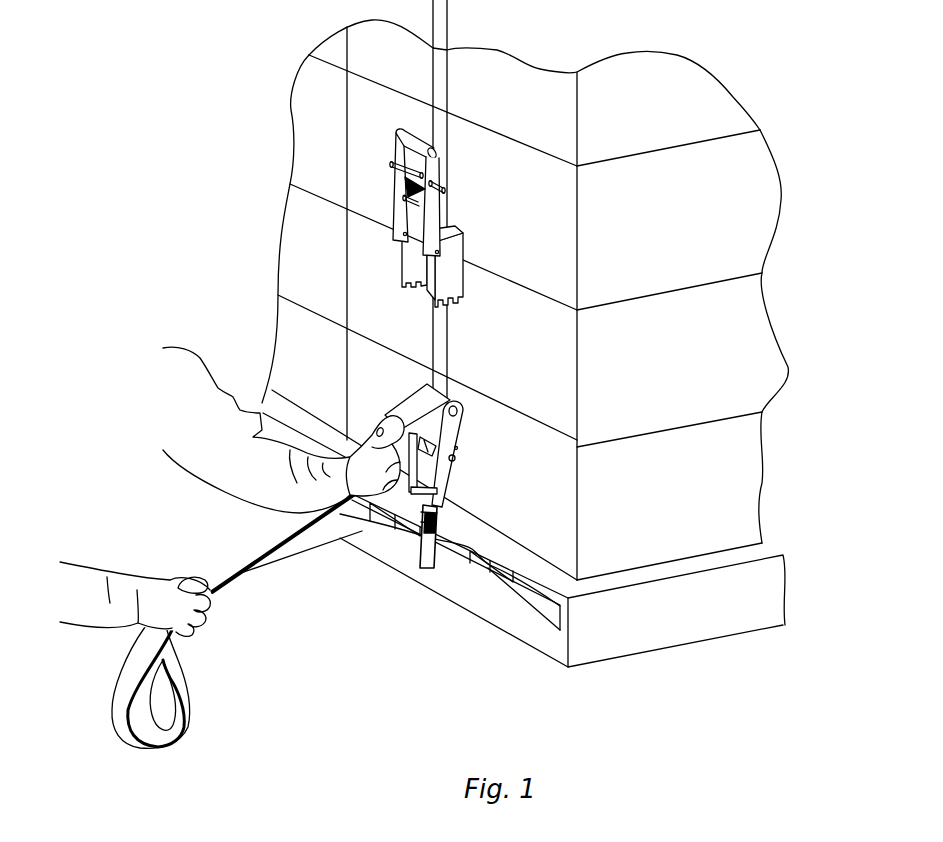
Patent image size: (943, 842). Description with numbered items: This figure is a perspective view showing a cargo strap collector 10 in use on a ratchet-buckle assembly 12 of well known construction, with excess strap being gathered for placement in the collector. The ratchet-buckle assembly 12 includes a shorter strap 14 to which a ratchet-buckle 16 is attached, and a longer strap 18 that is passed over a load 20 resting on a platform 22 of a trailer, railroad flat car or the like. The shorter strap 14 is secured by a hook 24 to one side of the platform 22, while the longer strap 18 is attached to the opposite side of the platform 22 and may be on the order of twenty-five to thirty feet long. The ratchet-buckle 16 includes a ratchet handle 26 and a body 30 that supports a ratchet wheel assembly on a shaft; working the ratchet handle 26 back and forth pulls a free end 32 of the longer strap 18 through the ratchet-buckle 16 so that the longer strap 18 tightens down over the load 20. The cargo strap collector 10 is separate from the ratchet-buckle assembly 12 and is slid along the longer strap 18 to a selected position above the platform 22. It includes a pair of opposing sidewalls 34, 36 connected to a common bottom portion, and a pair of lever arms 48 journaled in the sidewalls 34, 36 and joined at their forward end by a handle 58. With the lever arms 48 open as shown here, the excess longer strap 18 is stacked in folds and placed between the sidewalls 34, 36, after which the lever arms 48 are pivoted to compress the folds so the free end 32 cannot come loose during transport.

The cargo strap collector 10 is at (438, 183).
The ratchet-buckle assembly 12 is at (473, 423).
The shorter strap 14 is at (430, 517).
The ratchet-buckle 16 is at (468, 447).
The longer strap 18 is at (448, 98).
The load 20 is at (787, 197).
The platform 22 is at (670, 628).
The hook 24 is at (428, 550).
The ratchet handle 26 is at (450, 488).
The body 30 is at (456, 458).
The free end 32 is at (230, 557).
The sidewall 34 is at (452, 272).
The sidewall 36 is at (410, 263).
The lever arms 48 is at (398, 214).
The handle 58 is at (414, 138).